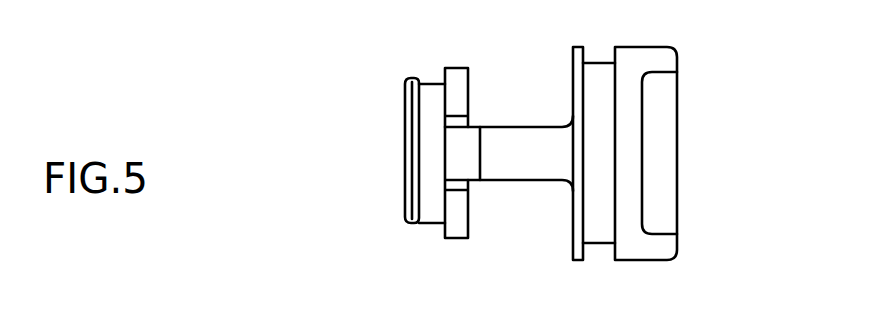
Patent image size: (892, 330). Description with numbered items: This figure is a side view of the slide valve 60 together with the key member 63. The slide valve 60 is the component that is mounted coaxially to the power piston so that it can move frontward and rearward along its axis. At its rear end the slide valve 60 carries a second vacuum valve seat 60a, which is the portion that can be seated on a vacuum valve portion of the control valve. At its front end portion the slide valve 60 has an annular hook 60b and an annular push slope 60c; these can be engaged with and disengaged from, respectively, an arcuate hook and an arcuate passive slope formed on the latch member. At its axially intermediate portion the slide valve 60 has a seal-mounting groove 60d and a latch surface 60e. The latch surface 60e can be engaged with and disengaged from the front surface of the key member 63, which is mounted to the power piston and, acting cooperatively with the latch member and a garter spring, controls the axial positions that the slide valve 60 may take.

The slide valve 60 is at (635, 47).
The second vacuum valve seat 60a is at (677, 240).
The annular hook 60b is at (415, 227).
The annular push slope 60c is at (405, 88).
The seal-mounting groove 60d is at (600, 243).
The latch surface 60e is at (452, 88).
The key member 63 is at (457, 238).